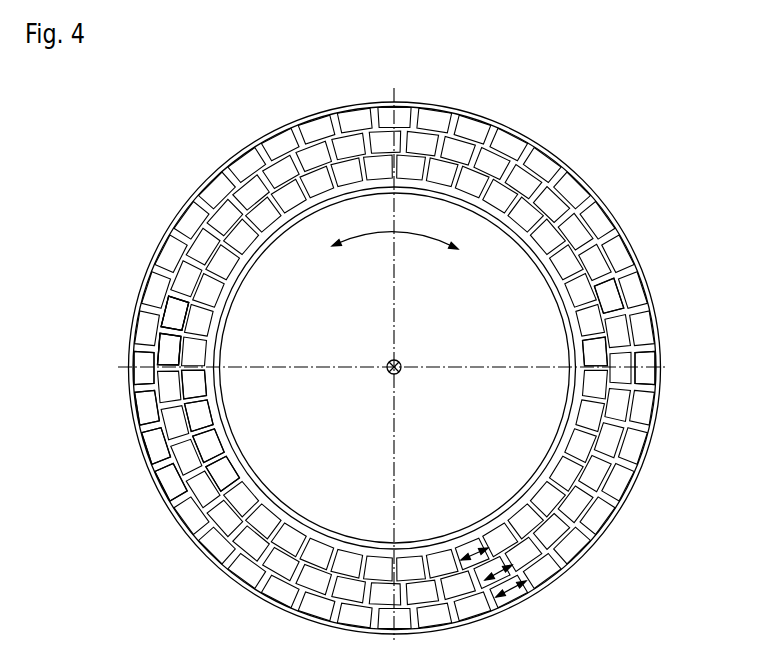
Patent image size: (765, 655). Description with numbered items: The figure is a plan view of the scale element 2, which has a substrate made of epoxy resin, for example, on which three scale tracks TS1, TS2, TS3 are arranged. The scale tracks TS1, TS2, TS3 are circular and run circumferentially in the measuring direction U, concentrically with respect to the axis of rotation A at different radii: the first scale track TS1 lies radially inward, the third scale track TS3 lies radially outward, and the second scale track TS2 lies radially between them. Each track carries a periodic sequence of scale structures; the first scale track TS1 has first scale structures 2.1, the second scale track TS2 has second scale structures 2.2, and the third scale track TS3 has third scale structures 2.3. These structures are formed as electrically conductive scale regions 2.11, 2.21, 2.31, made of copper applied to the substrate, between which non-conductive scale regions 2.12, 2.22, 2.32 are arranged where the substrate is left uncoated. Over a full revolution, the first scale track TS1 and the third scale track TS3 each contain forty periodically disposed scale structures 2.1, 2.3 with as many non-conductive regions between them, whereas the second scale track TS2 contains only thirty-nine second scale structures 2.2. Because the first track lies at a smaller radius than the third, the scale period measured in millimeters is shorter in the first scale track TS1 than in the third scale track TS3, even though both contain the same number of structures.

The scale element 2 is at (194, 186).
The first scale structure 2.1 is at (298, 260).
The electrically conductive scale region of the first scale structure 2.11 is at (227, 262).
The non-conductive scale region of the first scale structure 2.12 is at (218, 285).
The second scale structure 2.2 is at (132, 381).
The electrically conductive scale region of the second scale structure 2.21 is at (168, 383).
The non-conductive scale region of the second scale structure 2.22 is at (172, 405).
The third scale structure 2.3 is at (132, 351).
The electrically conductive scale region of the third scale structure 2.31 is at (149, 295).
The non-conductive scale region of the third scale structure 2.32 is at (151, 273).
The first scale track TS1 is at (581, 360).
The second scale track TS2 is at (605, 313).
The third scale track TS3 is at (654, 347).
The axis of rotation A is at (399, 362).
The measuring direction U is at (395, 230).